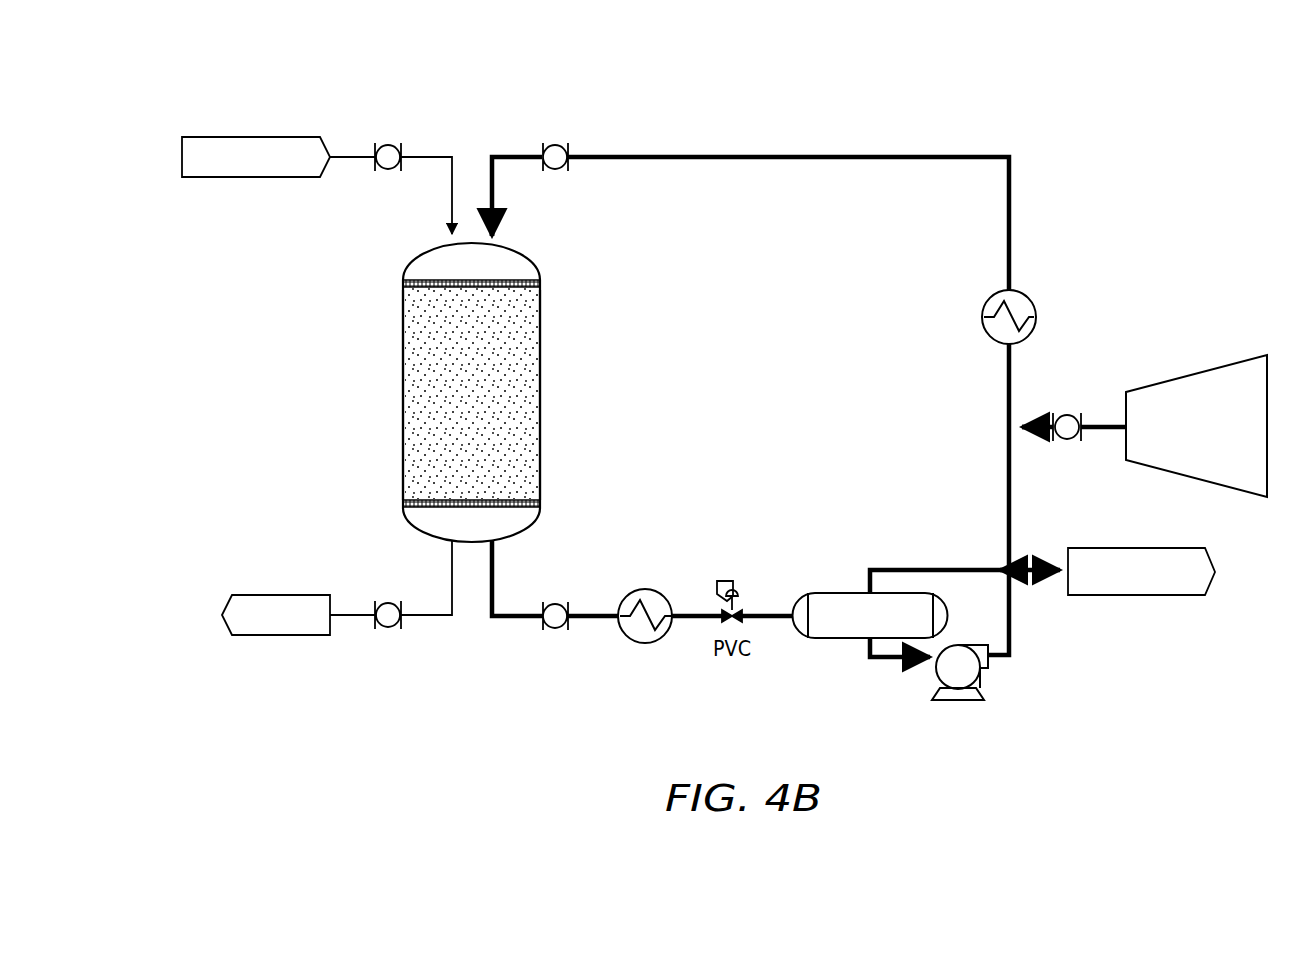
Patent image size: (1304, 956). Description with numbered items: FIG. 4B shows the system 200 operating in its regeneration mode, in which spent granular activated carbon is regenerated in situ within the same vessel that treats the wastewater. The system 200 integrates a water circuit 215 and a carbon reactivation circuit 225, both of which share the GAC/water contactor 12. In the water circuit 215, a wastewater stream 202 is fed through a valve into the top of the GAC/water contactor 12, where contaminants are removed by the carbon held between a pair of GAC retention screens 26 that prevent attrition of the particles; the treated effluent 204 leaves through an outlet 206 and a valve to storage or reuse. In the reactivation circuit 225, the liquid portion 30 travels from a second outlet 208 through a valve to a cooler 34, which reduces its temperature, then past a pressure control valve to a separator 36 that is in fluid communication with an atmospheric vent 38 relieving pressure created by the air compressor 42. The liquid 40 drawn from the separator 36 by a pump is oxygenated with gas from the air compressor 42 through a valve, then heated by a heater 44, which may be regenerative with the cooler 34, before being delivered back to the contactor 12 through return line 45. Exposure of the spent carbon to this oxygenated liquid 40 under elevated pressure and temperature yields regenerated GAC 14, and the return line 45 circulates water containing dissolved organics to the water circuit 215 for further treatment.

The system 200 is at (684, 56).
The wastewater stream 202 is at (233, 177).
The effluent 204 is at (265, 635).
The outlet 206 is at (449, 546).
The outlet 208 is at (495, 546).
The GAC/water contactor 12 is at (541, 313).
The regenerated GAC 14 is at (508, 476).
The GAC retention screens 26 is at (540, 284).
The water circuit 215 is at (388, 397).
The carbon reactivation circuit 225 is at (556, 397).
The liquid portion 30 is at (594, 614).
The cooler 34 is at (645, 643).
The separator 36 is at (848, 593).
The vent 38 is at (1137, 595).
The liquid 40 is at (905, 662).
The air compressor 42 is at (1196, 375).
The heater 44 is at (995, 298).
The return line 45 is at (791, 156).